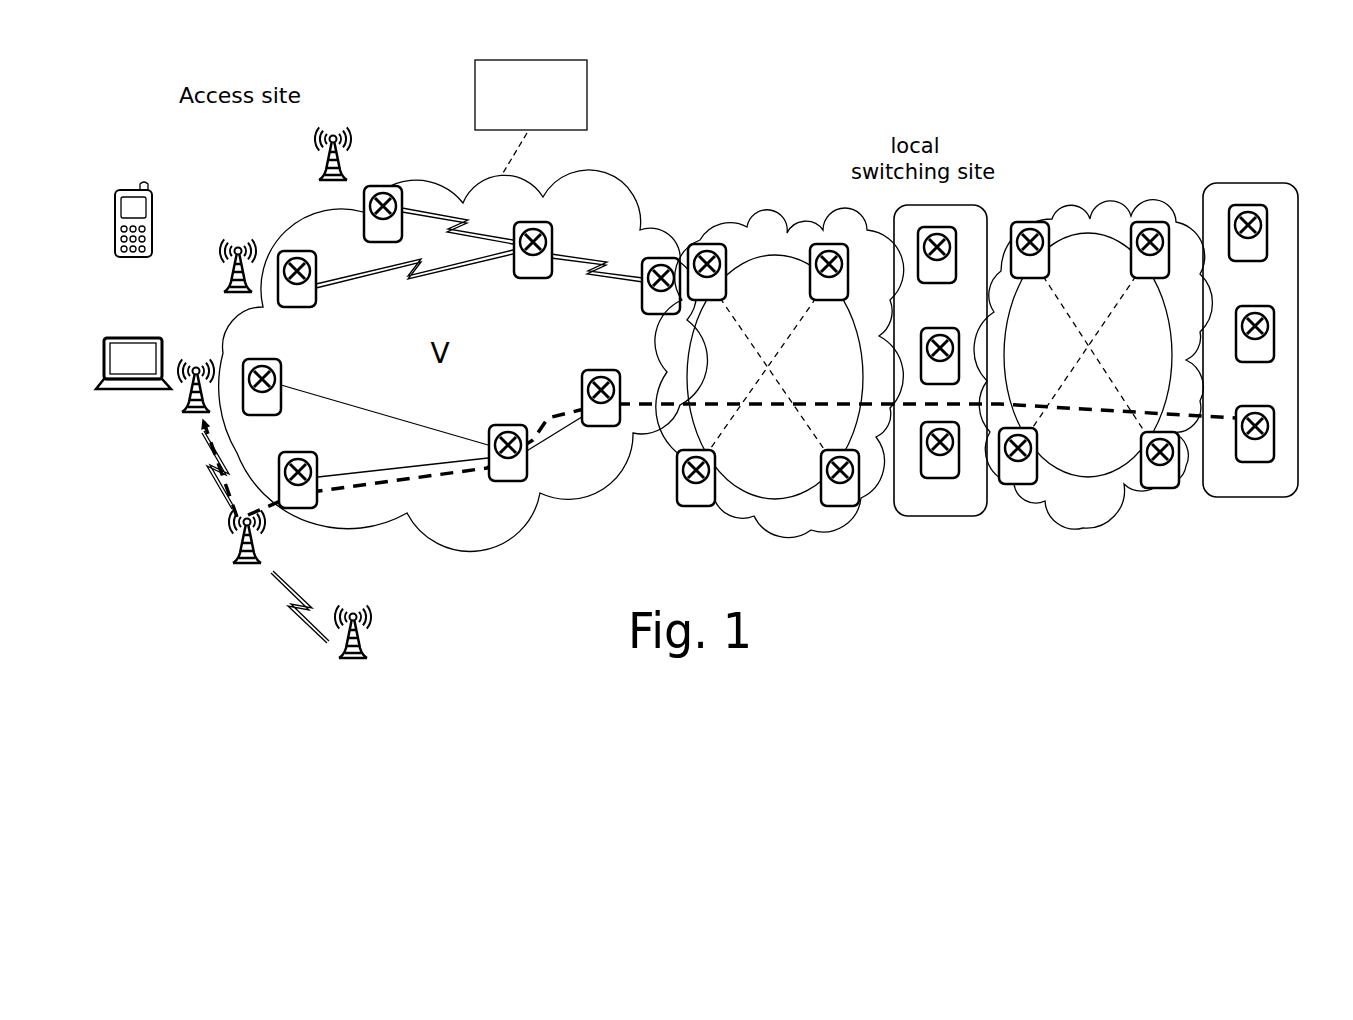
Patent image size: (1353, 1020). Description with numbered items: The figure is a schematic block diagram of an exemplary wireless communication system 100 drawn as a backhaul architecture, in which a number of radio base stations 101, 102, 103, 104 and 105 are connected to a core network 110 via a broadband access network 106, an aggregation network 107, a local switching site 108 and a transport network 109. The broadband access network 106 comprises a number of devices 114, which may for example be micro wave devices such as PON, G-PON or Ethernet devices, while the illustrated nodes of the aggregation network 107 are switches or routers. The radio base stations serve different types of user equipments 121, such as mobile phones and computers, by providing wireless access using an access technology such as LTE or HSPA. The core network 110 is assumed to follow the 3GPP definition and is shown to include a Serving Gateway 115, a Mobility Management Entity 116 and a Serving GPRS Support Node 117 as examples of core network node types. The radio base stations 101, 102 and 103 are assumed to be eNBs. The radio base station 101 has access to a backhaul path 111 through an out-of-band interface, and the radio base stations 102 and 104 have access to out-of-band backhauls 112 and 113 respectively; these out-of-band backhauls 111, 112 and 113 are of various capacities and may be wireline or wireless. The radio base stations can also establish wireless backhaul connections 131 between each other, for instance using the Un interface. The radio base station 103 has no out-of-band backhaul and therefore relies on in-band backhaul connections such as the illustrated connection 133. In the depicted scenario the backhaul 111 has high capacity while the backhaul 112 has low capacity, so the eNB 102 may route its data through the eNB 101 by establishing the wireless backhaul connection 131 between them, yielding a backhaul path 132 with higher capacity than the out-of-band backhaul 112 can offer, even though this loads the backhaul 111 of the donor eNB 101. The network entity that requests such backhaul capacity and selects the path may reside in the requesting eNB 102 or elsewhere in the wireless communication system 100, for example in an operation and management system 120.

The wireless communication system 100 is at (770, 109).
The radio base station 101 is at (233, 545).
The radio base station 102 is at (185, 406).
The radio base station 103 is at (363, 650).
The radio base station 104 is at (222, 265).
The radio base station 105 is at (338, 172).
The broadband access network 106 is at (462, 552).
The aggregation network 107 is at (775, 538).
The local switching site 108 is at (946, 524).
The transport network 109 is at (1083, 530).
The core network 110 is at (1276, 502).
The backhaul path 111 is at (383, 468).
The out-of-band backhaul 112 is at (390, 414).
The out-of-band backhaul 113 is at (428, 286).
The devices 114 is at (535, 284).
The Serving Gateway 115 is at (1232, 462).
The Mobility Management Entity 116 is at (1236, 326).
The SGSN node 117 is at (1244, 205).
The operation and management system 120 is at (588, 88).
The user equipments 121 is at (150, 228).
The wireless backhaul connection 131 is at (205, 468).
The backhaul path 132 is at (440, 484).
The in-band backhaul connection 133 is at (284, 603).